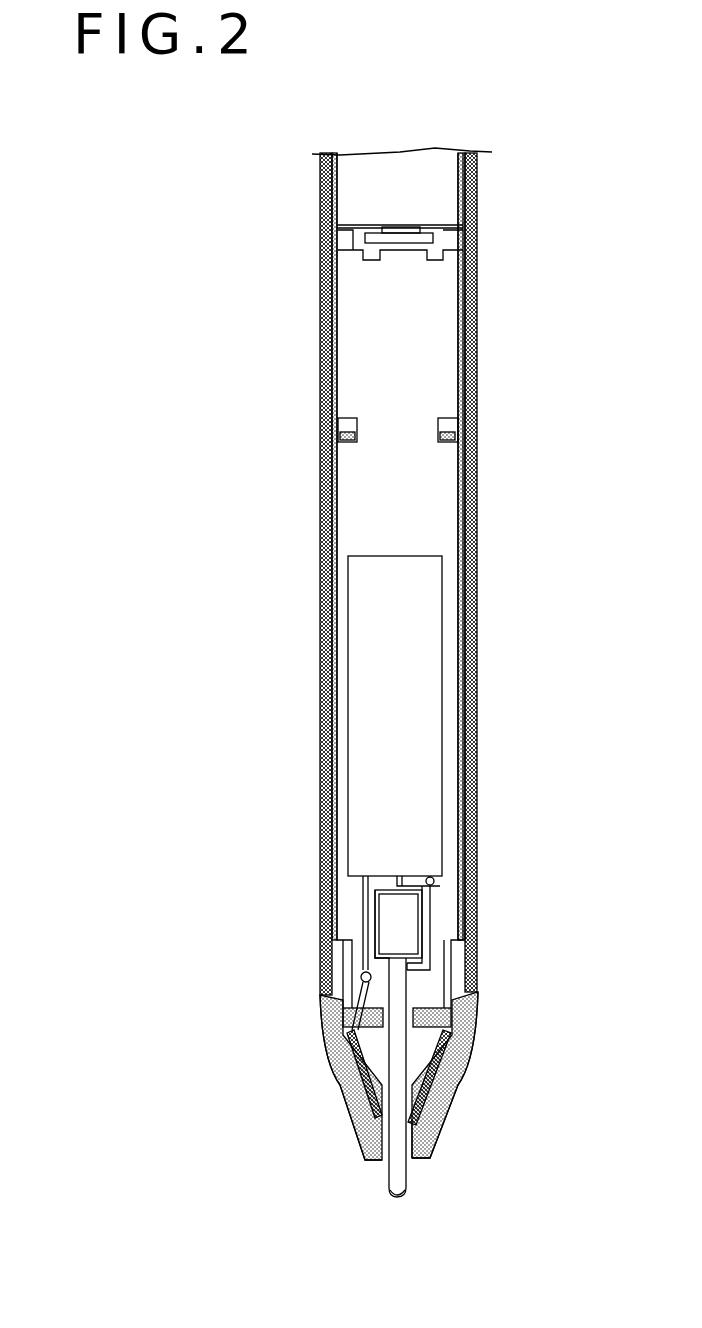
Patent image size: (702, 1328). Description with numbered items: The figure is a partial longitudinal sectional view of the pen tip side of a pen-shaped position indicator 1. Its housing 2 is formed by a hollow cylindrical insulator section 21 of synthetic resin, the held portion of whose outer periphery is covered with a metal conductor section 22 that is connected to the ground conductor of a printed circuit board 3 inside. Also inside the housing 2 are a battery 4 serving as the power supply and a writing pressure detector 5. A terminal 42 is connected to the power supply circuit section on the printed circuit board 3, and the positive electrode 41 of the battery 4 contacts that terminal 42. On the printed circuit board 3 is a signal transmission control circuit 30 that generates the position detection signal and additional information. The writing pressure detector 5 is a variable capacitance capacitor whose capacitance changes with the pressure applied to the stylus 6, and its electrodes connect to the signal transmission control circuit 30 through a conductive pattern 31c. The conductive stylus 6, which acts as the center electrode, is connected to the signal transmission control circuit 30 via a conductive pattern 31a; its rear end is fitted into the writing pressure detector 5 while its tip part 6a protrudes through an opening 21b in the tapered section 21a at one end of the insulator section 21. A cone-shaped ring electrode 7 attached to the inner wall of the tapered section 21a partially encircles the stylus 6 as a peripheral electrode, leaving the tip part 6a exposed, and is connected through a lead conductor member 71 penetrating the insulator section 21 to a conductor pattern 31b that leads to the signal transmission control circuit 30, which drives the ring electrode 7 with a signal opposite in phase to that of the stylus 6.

The position indicator 1 is at (333, 104).
The housing 2 is at (318, 333).
The insulator section 21 is at (327, 402).
The conductor section 22 is at (322, 470).
The tapered section 21a is at (437, 1128).
The opening 21b is at (412, 1165).
The printed circuit board 3 is at (350, 520).
The battery 4 is at (350, 190).
The positive electrode 41 is at (408, 226).
The terminal 42 is at (440, 241).
The signal transmission control circuit 30 is at (440, 745).
The conductive pattern 31a is at (436, 915).
The conductor pattern 31b is at (366, 902).
The conductive pattern 31c is at (432, 882).
The writing pressure detector 5 is at (413, 943).
The stylus 6 is at (405, 1080).
The tip part 6a is at (394, 1200).
The ring electrode 7 is at (360, 1103).
The lead conductor member 71 is at (366, 1040).